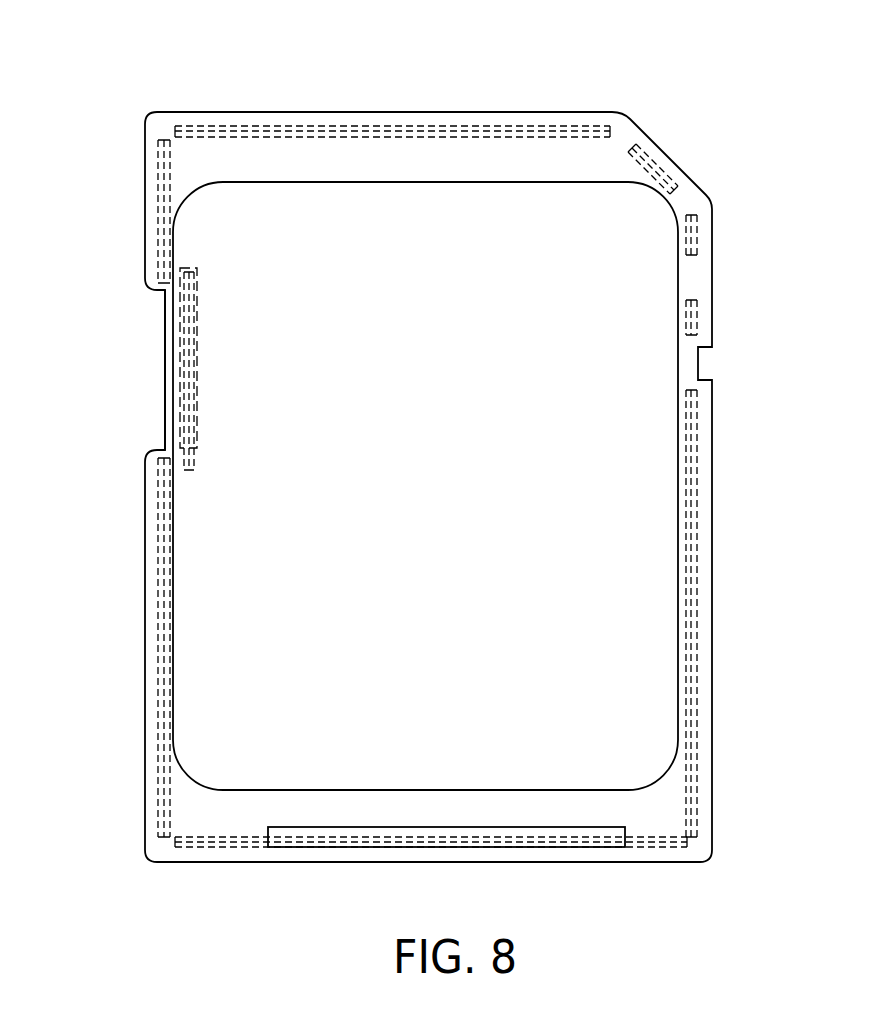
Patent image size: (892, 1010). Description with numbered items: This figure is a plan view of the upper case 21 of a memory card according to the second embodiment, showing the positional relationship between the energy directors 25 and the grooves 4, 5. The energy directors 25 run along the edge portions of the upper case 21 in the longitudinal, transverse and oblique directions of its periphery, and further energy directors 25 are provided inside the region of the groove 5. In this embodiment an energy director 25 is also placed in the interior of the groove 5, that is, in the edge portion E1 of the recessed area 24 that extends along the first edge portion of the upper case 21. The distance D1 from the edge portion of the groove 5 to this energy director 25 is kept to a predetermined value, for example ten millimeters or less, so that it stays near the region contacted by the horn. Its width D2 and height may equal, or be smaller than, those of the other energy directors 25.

The upper case 21 is at (517, 73).
The groove 5 is at (427, 183).
The groove 4 is at (425, 827).
The recessed area 24 is at (165, 356).
The energy directors 25 is at (214, 126).
The edge portion of the recessed area E1 is at (185, 388).
The distance from edge portion of groove to energy director D1 is at (150, 457).
The width of the energy director D2 is at (165, 285).